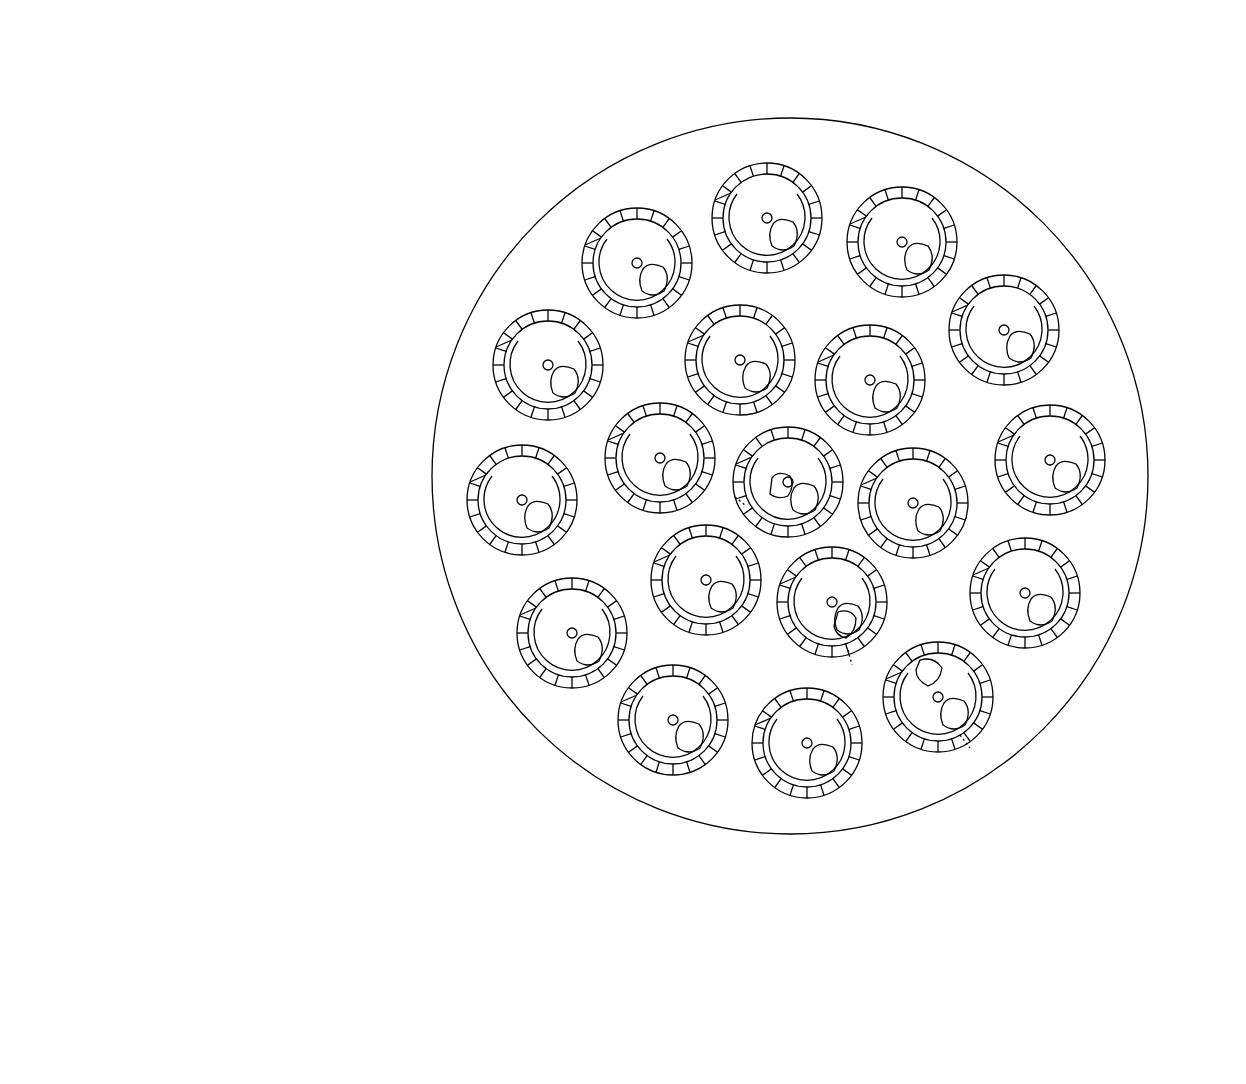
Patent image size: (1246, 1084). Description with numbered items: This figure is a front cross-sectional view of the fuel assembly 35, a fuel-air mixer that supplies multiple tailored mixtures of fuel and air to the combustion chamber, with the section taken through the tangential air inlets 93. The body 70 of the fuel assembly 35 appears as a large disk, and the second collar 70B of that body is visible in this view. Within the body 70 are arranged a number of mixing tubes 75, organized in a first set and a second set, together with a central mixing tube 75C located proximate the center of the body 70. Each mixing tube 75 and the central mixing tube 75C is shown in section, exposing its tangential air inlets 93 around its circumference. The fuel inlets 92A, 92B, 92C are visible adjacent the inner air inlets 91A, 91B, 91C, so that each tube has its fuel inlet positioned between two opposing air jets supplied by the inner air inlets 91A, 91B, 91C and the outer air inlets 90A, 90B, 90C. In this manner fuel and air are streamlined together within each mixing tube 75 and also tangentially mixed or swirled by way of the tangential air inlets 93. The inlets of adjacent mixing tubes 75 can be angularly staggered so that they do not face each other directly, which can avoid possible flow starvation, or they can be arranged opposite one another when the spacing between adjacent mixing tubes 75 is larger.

The fuel assembly 35 is at (483, 119).
The body 70 is at (1143, 377).
The second collar 70B is at (970, 183).
The mixing tube 75 is at (1054, 310).
The central mixing tube 75C is at (752, 445).
The tangential air inlet 93 is at (803, 430).
The first inner air inlet 91A is at (930, 665).
The second inner air inlet 91B is at (845, 623).
The central inner air inlet 91C is at (767, 488).
The first fuel inlet 92A is at (940, 699).
The second fuel inlet 92B is at (831, 606).
The central fuel inlet 92C is at (786, 485).
The first outer air inlet 90A is at (970, 748).
The second outer air inlet 90B is at (852, 665).
The central outer air inlet 90C is at (735, 497).